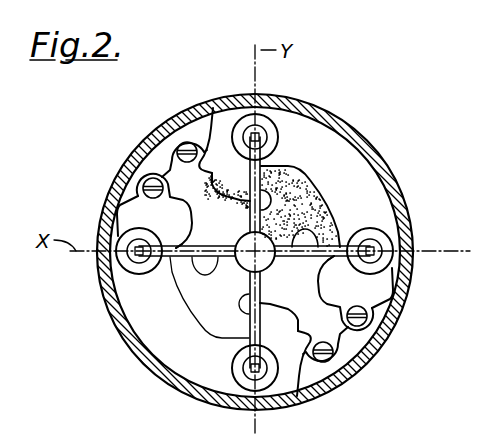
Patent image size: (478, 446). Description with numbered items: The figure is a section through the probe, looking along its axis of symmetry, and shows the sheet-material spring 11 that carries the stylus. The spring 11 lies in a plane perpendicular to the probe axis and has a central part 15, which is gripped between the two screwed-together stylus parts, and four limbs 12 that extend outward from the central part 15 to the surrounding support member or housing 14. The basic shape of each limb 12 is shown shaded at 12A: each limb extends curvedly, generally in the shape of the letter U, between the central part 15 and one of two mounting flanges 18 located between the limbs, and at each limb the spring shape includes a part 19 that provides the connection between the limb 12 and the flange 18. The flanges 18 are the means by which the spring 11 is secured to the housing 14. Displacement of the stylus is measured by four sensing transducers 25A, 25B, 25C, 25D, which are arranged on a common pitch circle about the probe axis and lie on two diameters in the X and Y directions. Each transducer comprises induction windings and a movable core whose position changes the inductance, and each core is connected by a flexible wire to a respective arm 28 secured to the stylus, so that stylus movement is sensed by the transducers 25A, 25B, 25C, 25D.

The spring 11 is at (328, 198).
The limb 12 is at (335, 218).
The basic shape of limb 12A is at (273, 166).
The support member or housing 14 is at (390, 332).
The central part of the spring 15 is at (268, 266).
The mounting flange 18 is at (163, 162).
The connection part 19 is at (201, 192).
The sensing transducer 25A is at (110, 207).
The sensing transducer 25B is at (388, 234).
The sensing transducer 25C is at (272, 118).
The sensing transducer 25D is at (218, 397).
The arm 28 is at (192, 312).